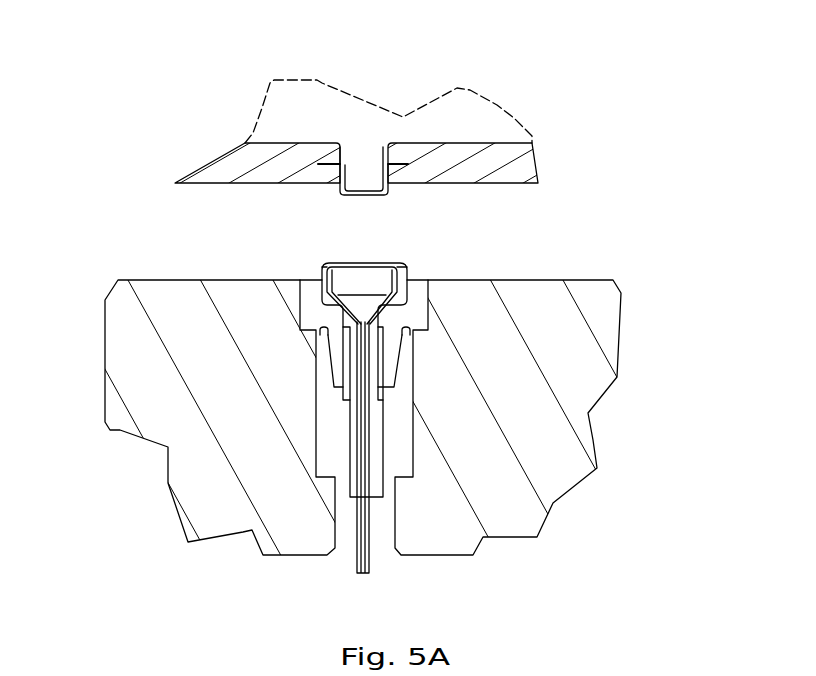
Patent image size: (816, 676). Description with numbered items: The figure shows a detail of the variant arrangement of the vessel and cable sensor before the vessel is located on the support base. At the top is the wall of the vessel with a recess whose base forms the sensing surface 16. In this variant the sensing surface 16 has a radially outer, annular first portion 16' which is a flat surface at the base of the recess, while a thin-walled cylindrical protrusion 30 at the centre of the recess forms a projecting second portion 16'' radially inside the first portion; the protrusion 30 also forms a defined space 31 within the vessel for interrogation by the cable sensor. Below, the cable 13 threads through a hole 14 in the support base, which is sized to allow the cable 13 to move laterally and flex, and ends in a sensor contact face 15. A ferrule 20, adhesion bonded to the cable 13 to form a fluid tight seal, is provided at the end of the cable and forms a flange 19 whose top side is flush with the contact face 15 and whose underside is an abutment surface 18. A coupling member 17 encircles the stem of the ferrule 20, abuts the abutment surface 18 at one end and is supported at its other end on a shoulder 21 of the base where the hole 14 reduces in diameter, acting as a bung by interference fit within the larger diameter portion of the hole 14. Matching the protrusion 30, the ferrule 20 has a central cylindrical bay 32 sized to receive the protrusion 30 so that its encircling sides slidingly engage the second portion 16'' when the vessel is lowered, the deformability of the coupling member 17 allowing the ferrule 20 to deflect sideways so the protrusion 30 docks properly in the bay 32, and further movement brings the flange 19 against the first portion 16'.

The cable 13 is at (369, 568).
The hole 14 is at (335, 508).
The sensor contact face 15 is at (337, 271).
The sensing surface 16 is at (377, 96).
The first portion 16' is at (279, 88).
The second portion 16'' is at (312, 115).
The coupling member 17 is at (415, 312).
The abutment surface 18 is at (326, 277).
The flange 19 is at (328, 268).
The ferrule 20 is at (350, 364).
The shoulder 21 is at (420, 333).
The protrusion 30 is at (378, 196).
The defined space 31 is at (367, 173).
The bay 32 is at (362, 278).